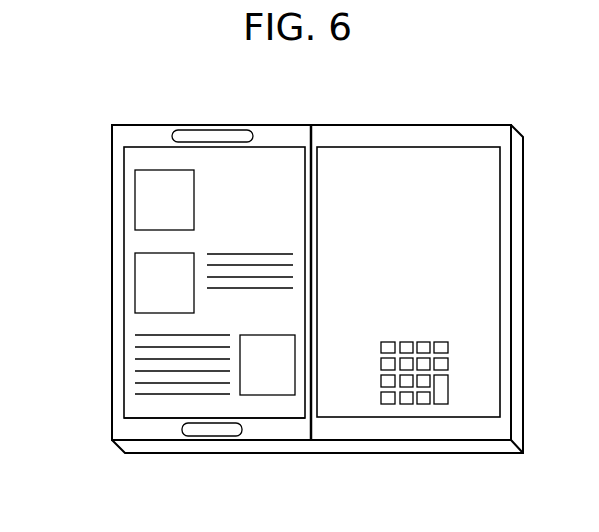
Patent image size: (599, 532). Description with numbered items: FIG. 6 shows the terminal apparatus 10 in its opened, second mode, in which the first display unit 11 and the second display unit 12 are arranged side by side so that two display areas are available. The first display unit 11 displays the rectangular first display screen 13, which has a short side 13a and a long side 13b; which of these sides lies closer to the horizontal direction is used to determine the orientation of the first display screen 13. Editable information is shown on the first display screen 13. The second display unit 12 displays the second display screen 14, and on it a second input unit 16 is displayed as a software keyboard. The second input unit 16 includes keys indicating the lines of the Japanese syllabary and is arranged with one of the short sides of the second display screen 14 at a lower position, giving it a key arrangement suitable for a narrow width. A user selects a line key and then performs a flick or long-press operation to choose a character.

The terminal apparatus 10 is at (48, 94).
The first display unit 11 is at (160, 124).
The second display unit 12 is at (468, 124).
The first display screen 13 is at (123, 190).
The short side 13a is at (258, 418).
The long side 13b is at (123, 368).
The second display screen 14 is at (500, 196).
The second input unit 16 is at (471, 381).